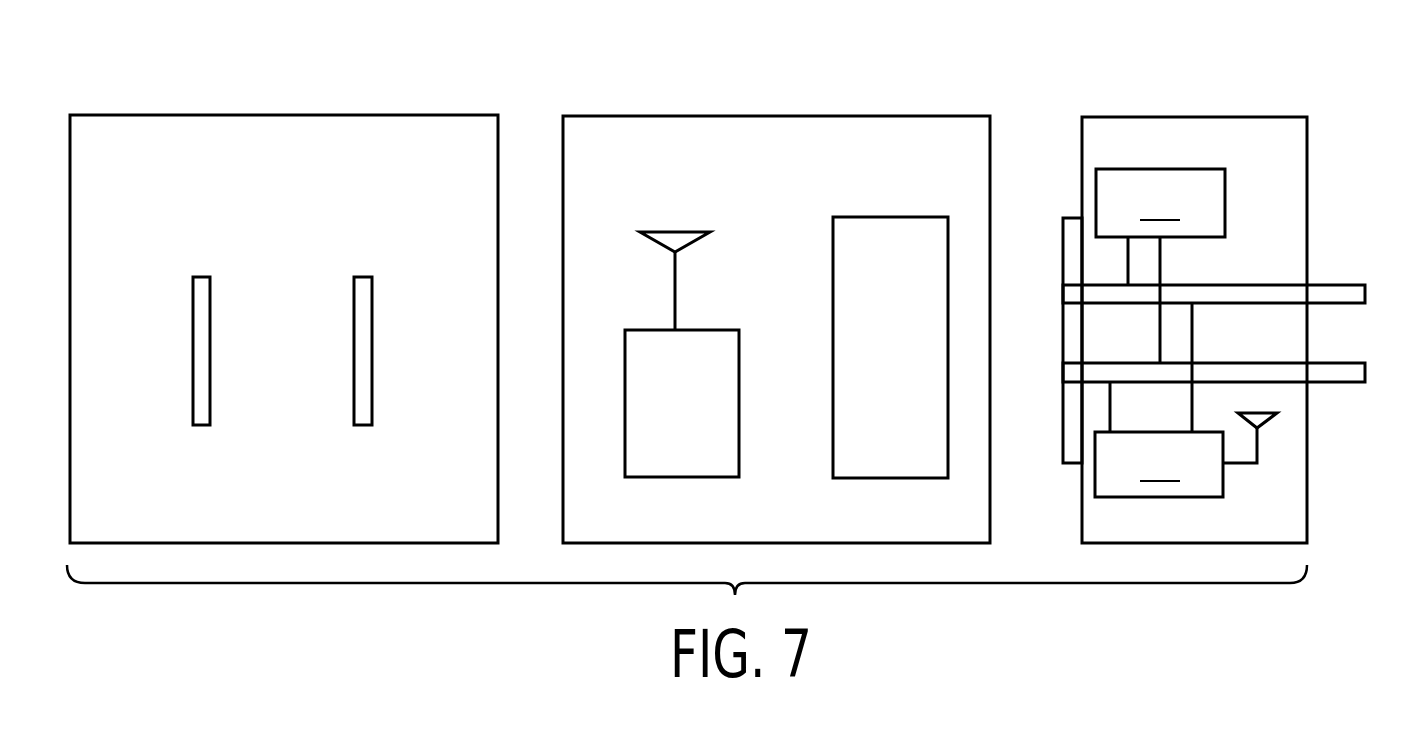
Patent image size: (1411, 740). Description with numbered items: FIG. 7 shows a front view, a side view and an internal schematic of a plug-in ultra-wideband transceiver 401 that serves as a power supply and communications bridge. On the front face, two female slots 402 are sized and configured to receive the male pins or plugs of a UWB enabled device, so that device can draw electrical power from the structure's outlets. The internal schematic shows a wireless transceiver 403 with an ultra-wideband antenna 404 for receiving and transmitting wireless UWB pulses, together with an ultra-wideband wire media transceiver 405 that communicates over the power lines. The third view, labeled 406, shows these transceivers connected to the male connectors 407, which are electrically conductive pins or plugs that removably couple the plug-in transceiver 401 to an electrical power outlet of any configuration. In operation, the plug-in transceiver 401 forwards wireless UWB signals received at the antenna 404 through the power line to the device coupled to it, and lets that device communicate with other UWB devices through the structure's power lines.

The plug-in ultra-wideband transceiver 401 is at (293, 114).
The female slots 402 is at (210, 348).
The wireless transceiver 403 is at (681, 477).
The ultra-wideband antenna 404 is at (675, 229).
The ultra-wideband wire media transceiver 405 is at (892, 216).
The control unit housing 406 is at (1192, 116).
The male connectors 407 is at (1338, 284).